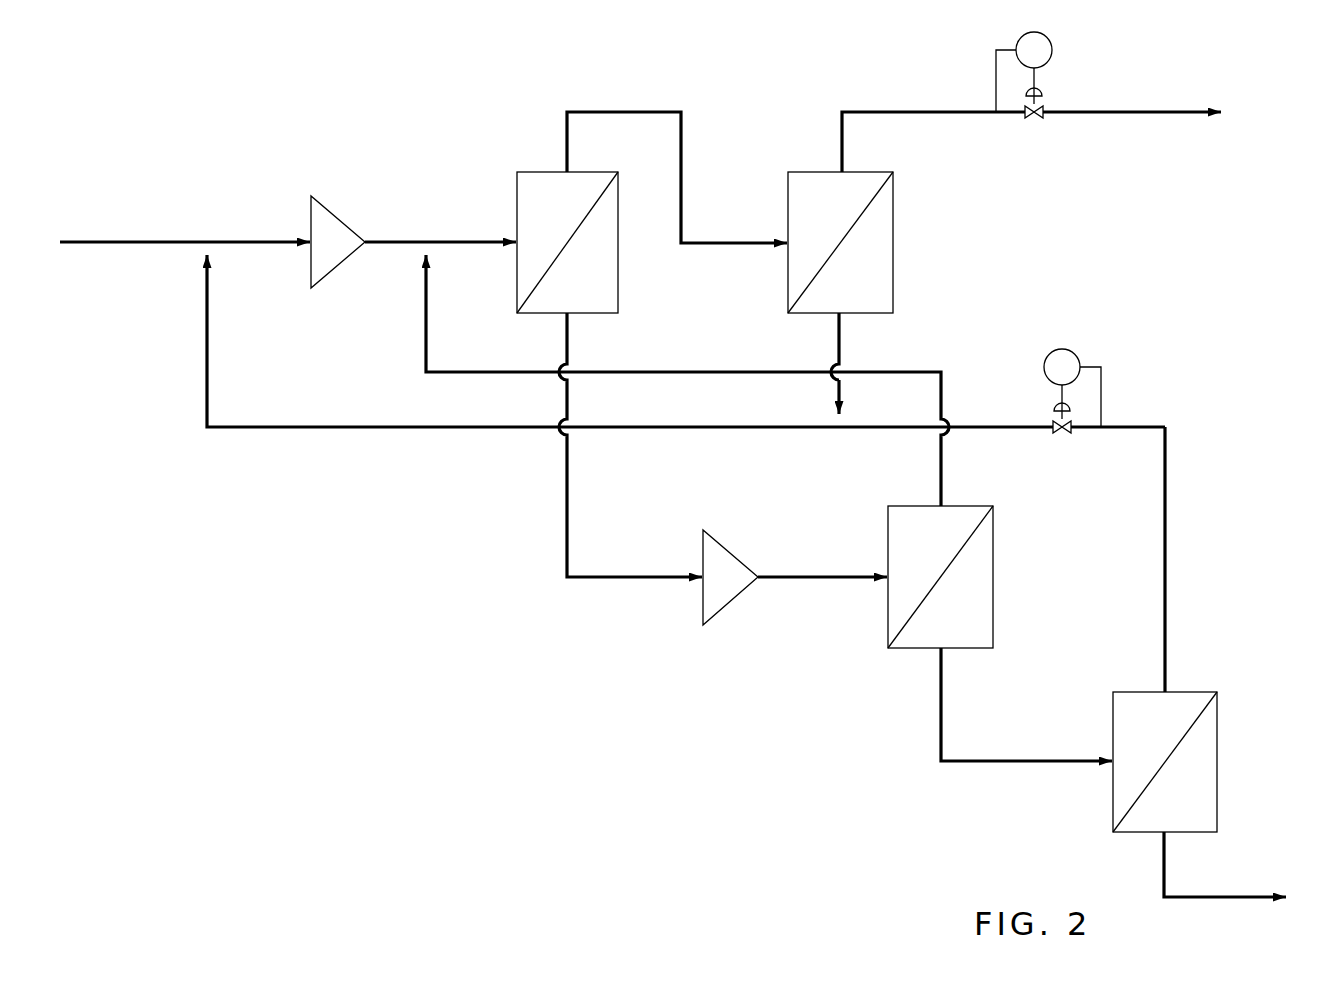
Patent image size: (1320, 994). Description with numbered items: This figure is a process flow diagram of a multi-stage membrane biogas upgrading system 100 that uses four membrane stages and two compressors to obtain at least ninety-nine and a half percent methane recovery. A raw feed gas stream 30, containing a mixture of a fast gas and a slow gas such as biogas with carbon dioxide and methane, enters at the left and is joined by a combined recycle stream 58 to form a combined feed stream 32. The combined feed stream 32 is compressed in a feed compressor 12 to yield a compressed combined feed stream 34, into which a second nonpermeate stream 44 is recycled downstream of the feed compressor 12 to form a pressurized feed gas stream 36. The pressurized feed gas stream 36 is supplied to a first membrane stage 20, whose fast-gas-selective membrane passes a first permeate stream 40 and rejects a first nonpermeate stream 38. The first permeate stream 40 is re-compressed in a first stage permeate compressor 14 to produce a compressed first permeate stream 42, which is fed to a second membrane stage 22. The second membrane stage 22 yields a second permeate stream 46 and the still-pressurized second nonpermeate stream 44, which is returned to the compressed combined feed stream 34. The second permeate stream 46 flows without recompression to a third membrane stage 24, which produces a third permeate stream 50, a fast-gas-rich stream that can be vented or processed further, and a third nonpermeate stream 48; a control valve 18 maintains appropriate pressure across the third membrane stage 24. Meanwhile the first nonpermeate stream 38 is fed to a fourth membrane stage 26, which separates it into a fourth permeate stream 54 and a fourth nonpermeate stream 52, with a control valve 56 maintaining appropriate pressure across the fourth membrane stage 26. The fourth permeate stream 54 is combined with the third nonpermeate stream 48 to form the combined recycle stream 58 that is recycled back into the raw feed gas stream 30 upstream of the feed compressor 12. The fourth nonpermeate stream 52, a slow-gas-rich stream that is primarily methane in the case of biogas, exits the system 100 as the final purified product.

The multi-stage membrane biogas upgrading system 100 is at (1204, 186).
The feed compressor 12 is at (343, 256).
The first stage permeate compressor 14 is at (736, 589).
The control valve 18 is at (1058, 350).
The first membrane stage 20 is at (568, 219).
The second membrane stage 22 is at (943, 554).
The third membrane stage 24 is at (1166, 736).
The fourth membrane stage 26 is at (843, 219).
The raw feed gas stream 30 is at (140, 240).
The combined feed stream 32 is at (225, 241).
The compressed combined feed stream 34 is at (413, 241).
The pressurized feed gas stream 36 is at (436, 241).
The first nonpermeate stream 38 is at (603, 112).
The first permeate stream 40 is at (650, 576).
The compressed first permeate stream 42 is at (842, 576).
The second nonpermeate stream 44 is at (708, 370).
The second permeate stream 46 is at (1024, 760).
The third nonpermeate stream 48 is at (1166, 564).
The third permeate stream 50 is at (1250, 896).
The fourth nonpermeate stream 52 is at (942, 112).
The fourth permeate stream 54 is at (867, 352).
The control valve 56 is at (1031, 32).
The combined recycle stream 58 is at (250, 426).